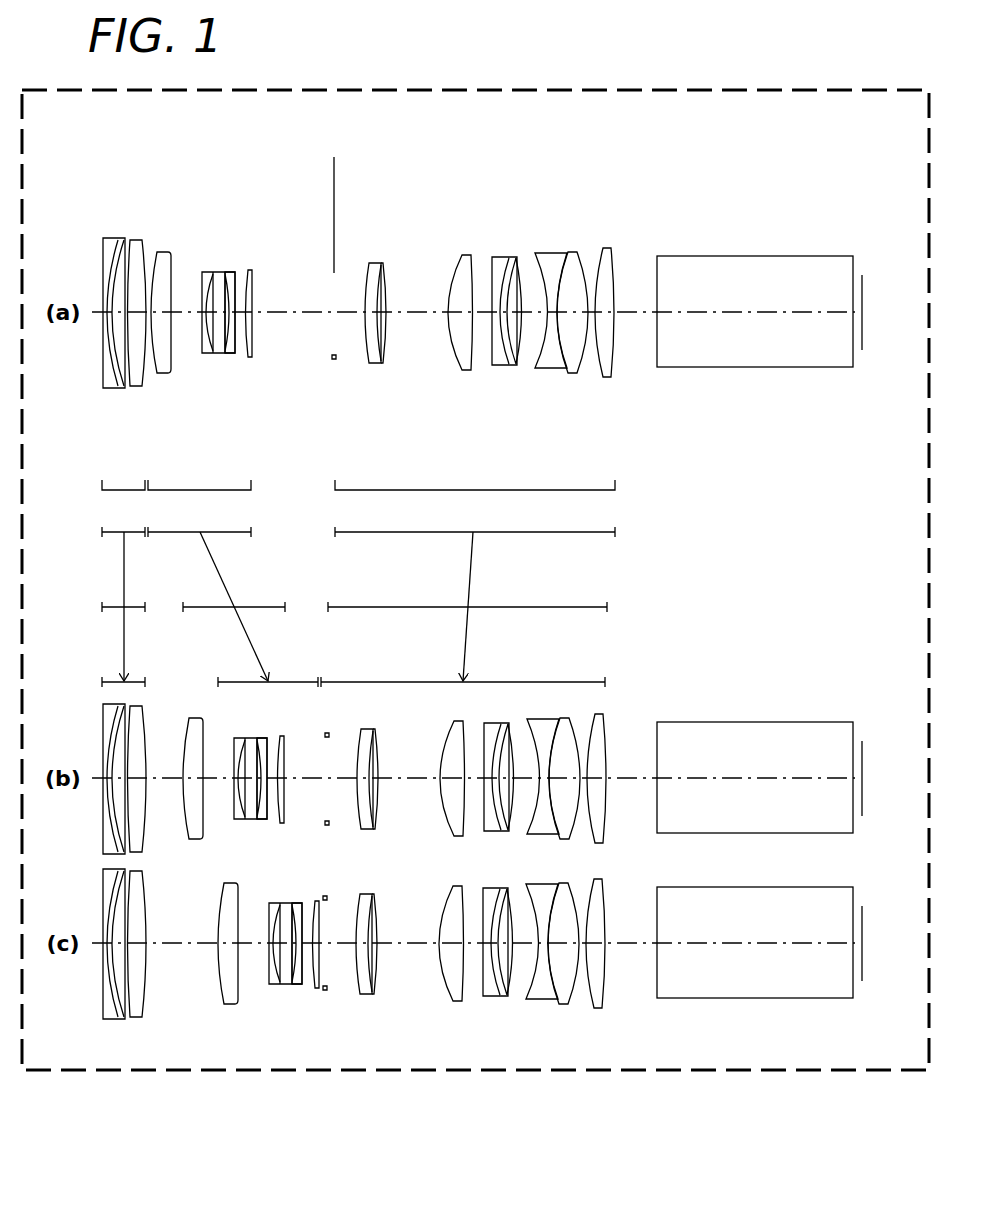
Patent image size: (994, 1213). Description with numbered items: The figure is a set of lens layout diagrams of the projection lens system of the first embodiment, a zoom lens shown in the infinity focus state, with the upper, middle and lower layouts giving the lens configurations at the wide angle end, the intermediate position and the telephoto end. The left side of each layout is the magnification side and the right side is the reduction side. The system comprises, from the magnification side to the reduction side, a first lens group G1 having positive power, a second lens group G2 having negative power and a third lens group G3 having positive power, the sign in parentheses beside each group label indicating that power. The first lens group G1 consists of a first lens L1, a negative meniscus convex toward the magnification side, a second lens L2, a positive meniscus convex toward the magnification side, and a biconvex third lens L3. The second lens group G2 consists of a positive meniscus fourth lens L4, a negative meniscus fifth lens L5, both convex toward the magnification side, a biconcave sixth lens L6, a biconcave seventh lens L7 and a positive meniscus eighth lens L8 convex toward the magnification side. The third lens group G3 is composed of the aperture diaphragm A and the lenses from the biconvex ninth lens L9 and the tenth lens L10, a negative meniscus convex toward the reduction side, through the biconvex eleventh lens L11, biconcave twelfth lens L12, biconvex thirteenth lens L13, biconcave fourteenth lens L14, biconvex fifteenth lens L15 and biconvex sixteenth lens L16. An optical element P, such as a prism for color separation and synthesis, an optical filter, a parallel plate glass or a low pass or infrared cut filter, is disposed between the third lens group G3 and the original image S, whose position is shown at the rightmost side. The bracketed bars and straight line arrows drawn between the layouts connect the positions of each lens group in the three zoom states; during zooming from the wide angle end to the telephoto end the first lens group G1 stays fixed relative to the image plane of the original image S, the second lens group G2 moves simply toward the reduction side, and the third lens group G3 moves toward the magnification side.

The first lens L1 is at (114, 237).
The second lens L2 is at (125, 240).
The third lens L3 is at (140, 243).
The fourth lens L4 is at (162, 253).
The fifth lens L5 is at (207, 272).
The sixth lens L6 is at (218, 272).
The seventh lens L7 is at (235, 272).
The eighth lens L8 is at (248, 268).
The ninth lens L9 is at (372, 262).
The tenth lens L10 is at (378, 262).
The eleventh lens L11 is at (463, 255).
The twelfth lens L12 is at (500, 258).
The thirteenth lens L13 is at (515, 258).
The fourteenth lens L14 is at (550, 256).
The fifteenth lens L15 is at (575, 253).
The sixteenth lens L16 is at (605, 248).
The aperture diaphragm A is at (333, 250).
The optical element P is at (753, 263).
The original image S is at (863, 297).
The first lens group G1 is at (125, 490).
The second lens group G2 is at (203, 490).
The third lens group G3 is at (473, 490).